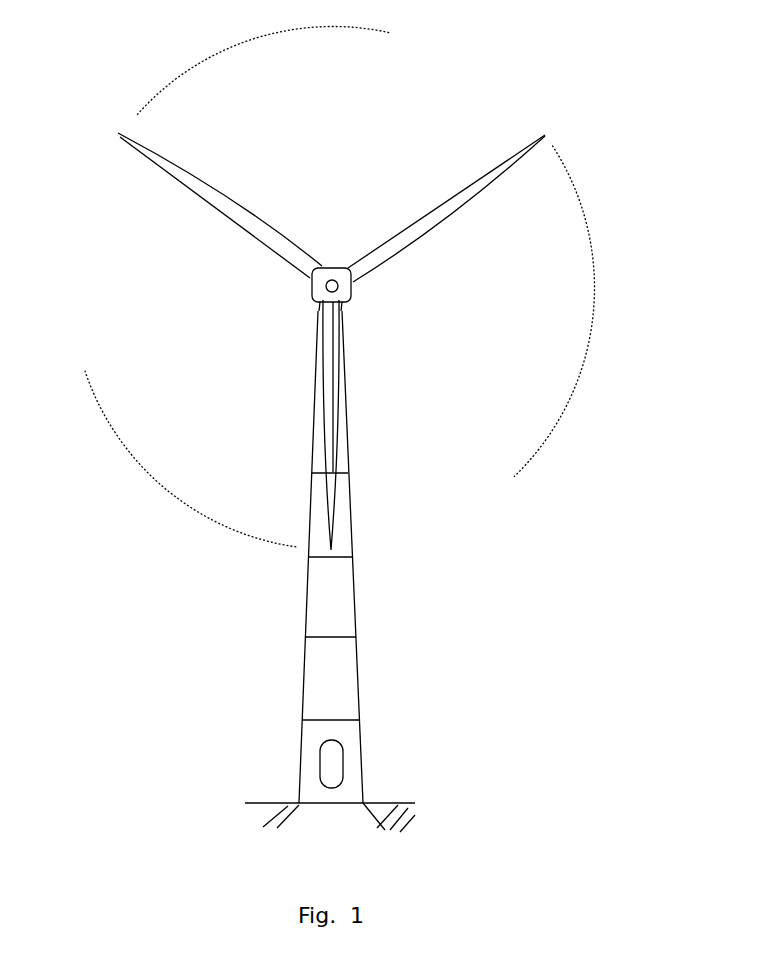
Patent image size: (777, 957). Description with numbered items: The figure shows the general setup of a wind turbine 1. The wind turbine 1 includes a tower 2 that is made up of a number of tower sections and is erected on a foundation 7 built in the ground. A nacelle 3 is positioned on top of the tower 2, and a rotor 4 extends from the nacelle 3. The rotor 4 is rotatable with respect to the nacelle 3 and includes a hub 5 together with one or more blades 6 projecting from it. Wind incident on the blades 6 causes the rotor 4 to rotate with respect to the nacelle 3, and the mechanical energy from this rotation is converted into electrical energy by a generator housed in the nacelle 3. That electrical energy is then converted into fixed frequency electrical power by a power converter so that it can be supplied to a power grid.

The wind turbine 1 is at (133, 623).
The tower 2 is at (343, 690).
The nacelle 3 is at (351, 297).
The rotor 4 is at (542, 442).
The hub 5 is at (325, 288).
The blades 6 is at (420, 218).
The foundation 7 is at (300, 813).